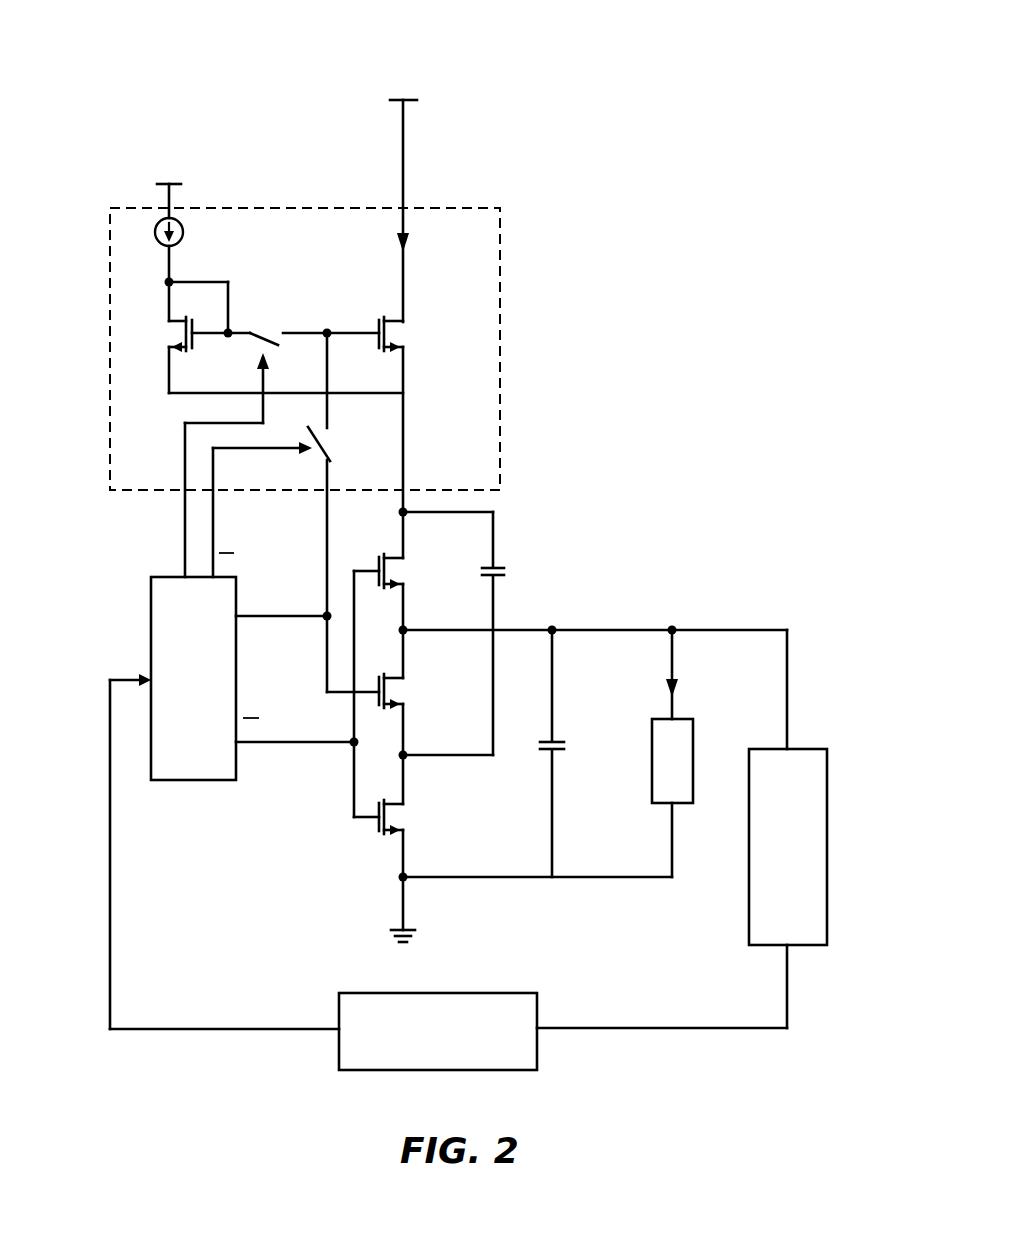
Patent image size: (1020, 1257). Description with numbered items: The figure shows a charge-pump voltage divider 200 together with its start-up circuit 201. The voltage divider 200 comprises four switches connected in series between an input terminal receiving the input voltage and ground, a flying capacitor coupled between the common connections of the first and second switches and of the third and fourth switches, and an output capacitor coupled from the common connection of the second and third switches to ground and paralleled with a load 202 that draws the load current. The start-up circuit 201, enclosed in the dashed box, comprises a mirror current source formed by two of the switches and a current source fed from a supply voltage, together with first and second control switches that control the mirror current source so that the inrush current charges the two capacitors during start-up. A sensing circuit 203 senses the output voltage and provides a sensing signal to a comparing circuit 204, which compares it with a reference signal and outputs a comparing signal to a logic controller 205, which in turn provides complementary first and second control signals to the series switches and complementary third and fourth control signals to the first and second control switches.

The charge-pump voltage divider 200 is at (451, 556).
The start-up circuit 201 is at (108, 372).
The load 202 is at (693, 775).
The sensing circuit 203 is at (828, 790).
The comparing circuit 204 is at (534, 1072).
The logic controller 205 is at (237, 767).